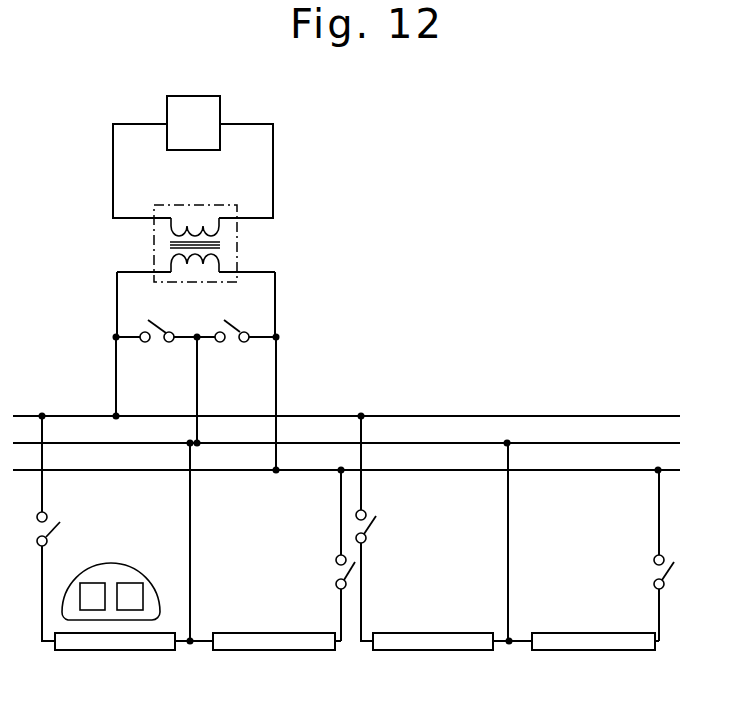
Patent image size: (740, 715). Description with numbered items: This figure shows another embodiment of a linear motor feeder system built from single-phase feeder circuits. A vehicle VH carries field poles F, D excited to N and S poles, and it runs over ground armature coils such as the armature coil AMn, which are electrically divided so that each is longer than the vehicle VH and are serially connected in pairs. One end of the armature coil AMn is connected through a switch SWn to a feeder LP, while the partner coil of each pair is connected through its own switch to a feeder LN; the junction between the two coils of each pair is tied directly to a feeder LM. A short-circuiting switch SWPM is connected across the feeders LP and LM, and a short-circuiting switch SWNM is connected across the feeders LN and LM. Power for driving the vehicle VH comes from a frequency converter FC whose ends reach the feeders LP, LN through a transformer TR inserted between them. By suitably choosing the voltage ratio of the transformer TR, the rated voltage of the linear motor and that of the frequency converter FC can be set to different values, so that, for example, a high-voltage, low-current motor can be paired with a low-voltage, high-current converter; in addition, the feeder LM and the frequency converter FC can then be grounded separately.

The frequency converter FC is at (193, 123).
The transformer TR is at (237, 248).
The short-circuiting switch SWPM is at (152, 320).
The short-circuiting switch SWNM is at (242, 327).
The feeder LP is at (472, 415).
The feeder LM is at (533, 443).
The feeder LN is at (597, 470).
The switch SWn is at (53, 527).
The vehicle VH is at (147, 576).
The S pole magnet (field) F is at (90, 583).
The N pole magnet D is at (128, 583).
The armature coil AMn is at (115, 659).